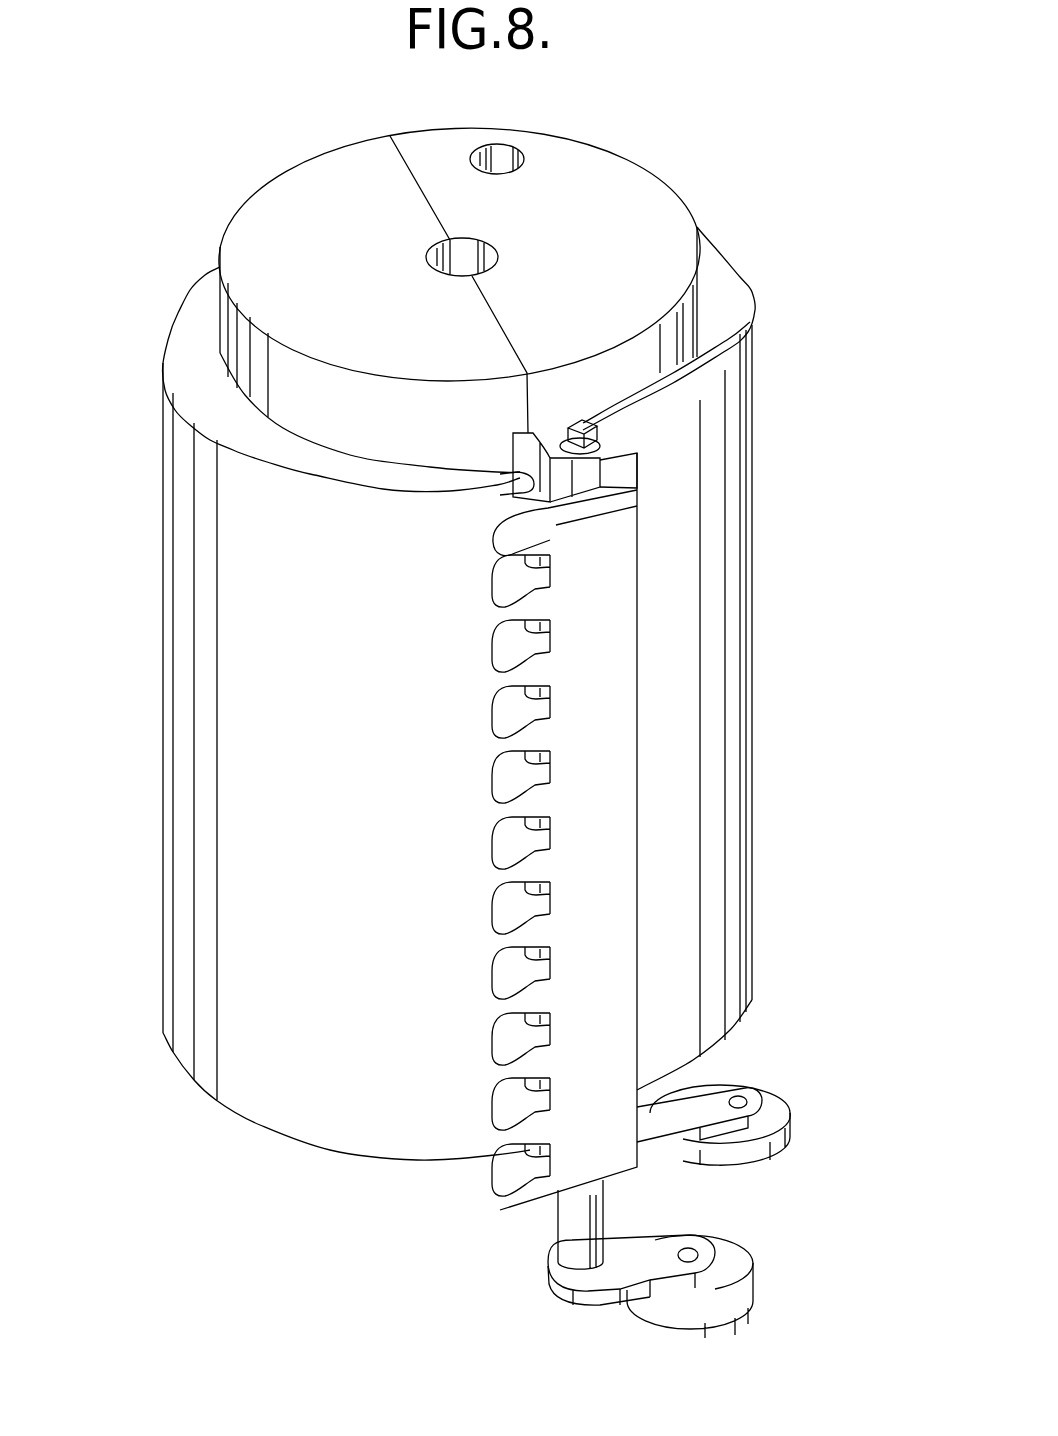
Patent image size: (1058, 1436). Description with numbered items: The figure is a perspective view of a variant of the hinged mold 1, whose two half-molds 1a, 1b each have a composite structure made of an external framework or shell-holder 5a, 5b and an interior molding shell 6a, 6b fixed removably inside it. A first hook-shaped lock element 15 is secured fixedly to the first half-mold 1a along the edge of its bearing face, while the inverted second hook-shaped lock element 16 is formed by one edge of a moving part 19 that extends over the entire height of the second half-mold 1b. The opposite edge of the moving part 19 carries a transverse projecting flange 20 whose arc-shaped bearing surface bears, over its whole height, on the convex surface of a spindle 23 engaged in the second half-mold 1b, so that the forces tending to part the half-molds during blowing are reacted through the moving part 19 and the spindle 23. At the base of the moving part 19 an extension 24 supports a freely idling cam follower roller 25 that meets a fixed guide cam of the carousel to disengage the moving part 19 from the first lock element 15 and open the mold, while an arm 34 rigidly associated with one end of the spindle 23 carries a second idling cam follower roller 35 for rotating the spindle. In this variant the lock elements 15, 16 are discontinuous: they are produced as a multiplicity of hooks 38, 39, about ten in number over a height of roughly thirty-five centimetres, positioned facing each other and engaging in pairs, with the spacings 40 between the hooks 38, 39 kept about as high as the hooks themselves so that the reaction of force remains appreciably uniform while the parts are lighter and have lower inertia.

The hinged mold 1 is at (770, 215).
The first half-mold 1a is at (161, 458).
The second half-mold 1b is at (767, 299).
The shell-holder 5a is at (200, 335).
The shell-holder 5b is at (722, 328).
The shell 6a is at (280, 220).
The shell 6b is at (592, 195).
The first hook-shaped lock element 15 is at (510, 483).
The second hook-shaped lock element 16 is at (507, 1184).
The moving part 19 is at (594, 829).
The transverse projecting flange 20 is at (612, 488).
The spindle 23 is at (582, 473).
The extension 24 is at (660, 1122).
The cam follower roller 25 is at (768, 1117).
The arm 34 is at (620, 1258).
The idling cam follower roller 35 is at (732, 1263).
The hooks 38 is at (512, 440).
The hooks 39 is at (517, 802).
The spacings 40 is at (497, 950).